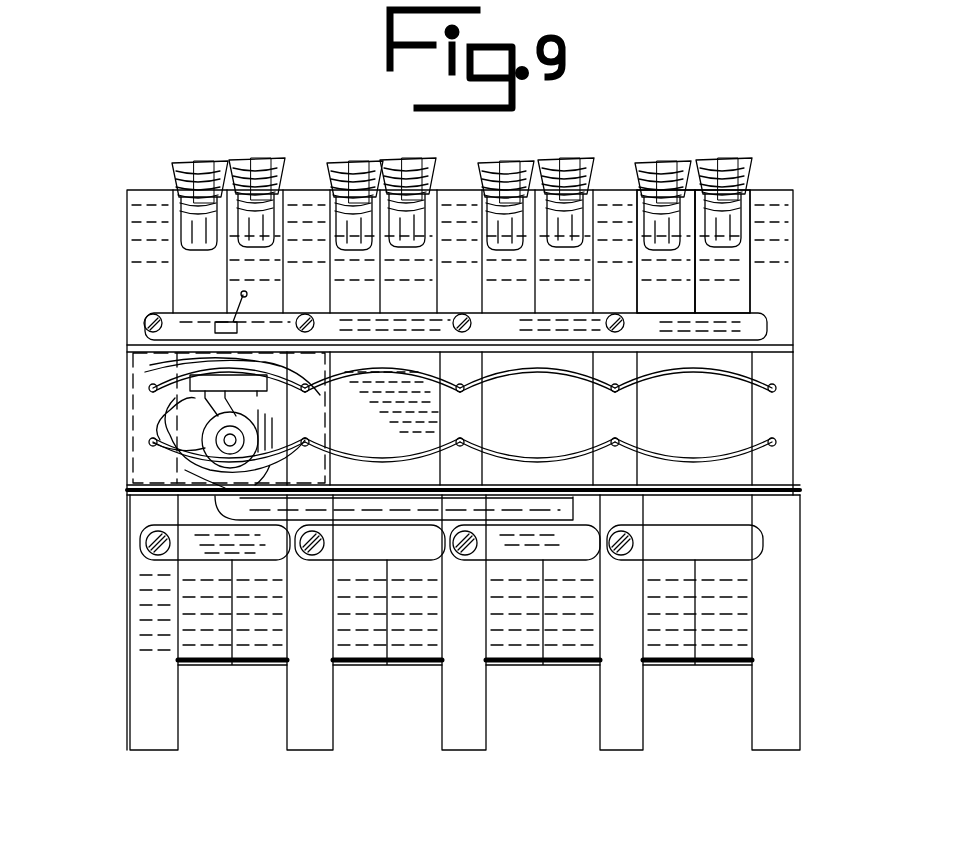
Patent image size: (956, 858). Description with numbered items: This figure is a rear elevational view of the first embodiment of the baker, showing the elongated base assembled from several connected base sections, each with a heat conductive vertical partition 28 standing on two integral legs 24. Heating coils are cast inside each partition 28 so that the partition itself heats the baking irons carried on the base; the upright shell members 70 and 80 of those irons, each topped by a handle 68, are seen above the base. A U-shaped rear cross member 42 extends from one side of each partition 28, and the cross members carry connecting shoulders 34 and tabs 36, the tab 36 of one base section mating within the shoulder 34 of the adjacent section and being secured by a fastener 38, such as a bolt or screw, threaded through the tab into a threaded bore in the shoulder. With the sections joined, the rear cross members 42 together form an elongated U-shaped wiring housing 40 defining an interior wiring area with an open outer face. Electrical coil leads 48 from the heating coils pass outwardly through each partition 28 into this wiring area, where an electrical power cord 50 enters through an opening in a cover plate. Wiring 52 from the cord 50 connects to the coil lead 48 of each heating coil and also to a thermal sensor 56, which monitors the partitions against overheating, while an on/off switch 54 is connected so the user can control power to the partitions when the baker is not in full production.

The legs 24 is at (148, 703).
The vertical partition 28 is at (137, 297).
The connecting shoulders 34 is at (137, 560).
The connecting tabs 36 is at (175, 550).
The fastener 38 is at (158, 556).
The wiring housing 40 is at (690, 498).
The rear cross member 42 is at (768, 320).
The electrical coil leads 48 is at (443, 433).
The electrical power cord 50 is at (175, 465).
The wiring 52 is at (665, 375).
The on/off switch 54 is at (212, 345).
The thermal sensor 56 is at (405, 510).
The handle 68 is at (722, 182).
The upright shell member 70 is at (652, 275).
The upright shell member 80 is at (733, 260).